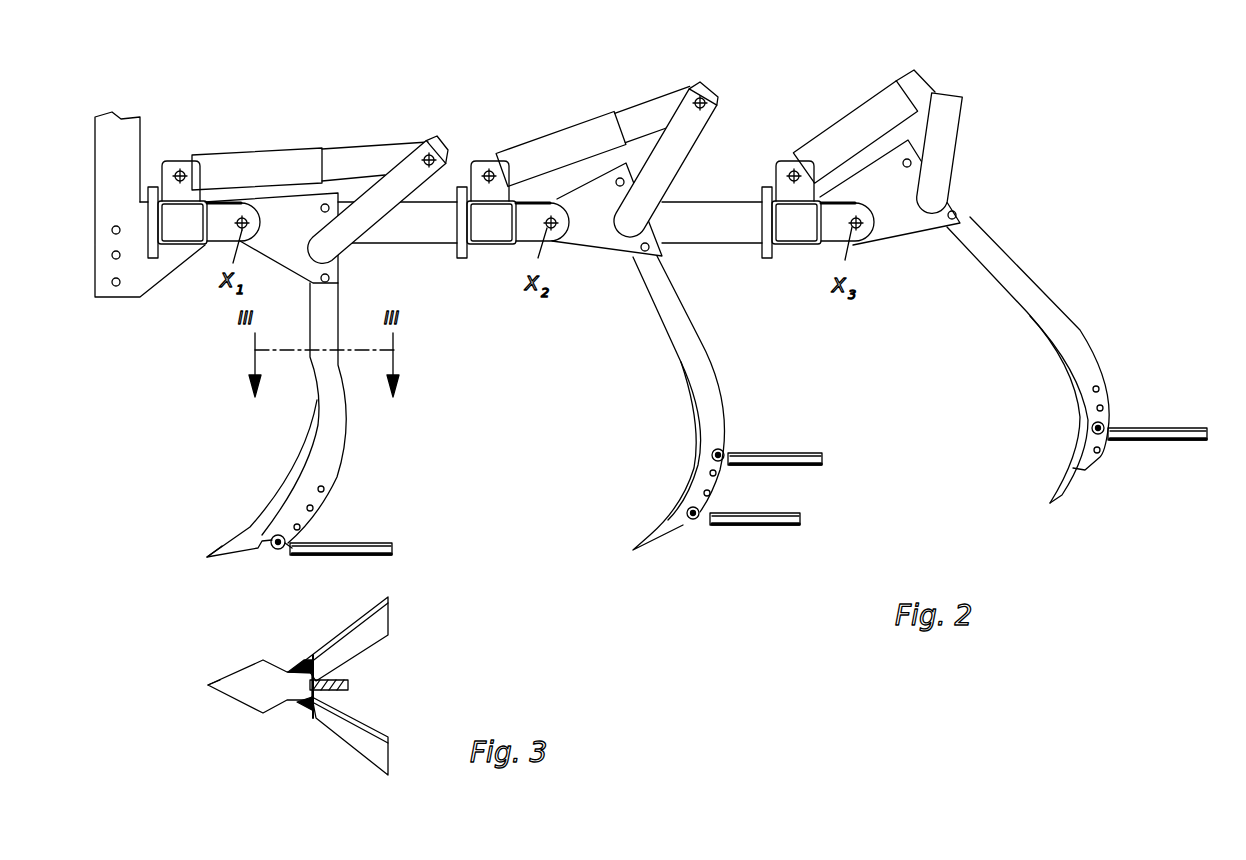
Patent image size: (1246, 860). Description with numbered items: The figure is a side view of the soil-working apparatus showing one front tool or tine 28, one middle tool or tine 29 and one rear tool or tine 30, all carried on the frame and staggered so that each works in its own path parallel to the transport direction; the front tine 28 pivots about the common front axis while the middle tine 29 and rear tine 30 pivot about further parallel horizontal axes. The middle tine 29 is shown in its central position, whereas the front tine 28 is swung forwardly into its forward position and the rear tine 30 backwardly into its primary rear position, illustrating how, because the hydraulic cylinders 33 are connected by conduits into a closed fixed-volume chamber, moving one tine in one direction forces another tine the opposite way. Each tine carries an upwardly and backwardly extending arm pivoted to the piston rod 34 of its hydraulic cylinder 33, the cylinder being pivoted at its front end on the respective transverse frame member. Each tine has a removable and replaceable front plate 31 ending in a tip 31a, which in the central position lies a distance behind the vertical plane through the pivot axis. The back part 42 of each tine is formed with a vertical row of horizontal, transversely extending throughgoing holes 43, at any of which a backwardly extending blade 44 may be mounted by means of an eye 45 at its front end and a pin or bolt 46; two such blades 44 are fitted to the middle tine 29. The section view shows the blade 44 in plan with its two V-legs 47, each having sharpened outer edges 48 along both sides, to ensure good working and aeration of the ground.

In FIG. 2, the front tool or tine 28 is at (370, 413).
In FIG. 2, the middle tool or tine 29 is at (675, 394).
In FIG. 2, the rear tool or tine 30 is at (1020, 324).
In FIG. 2, the front plate 31 is at (292, 493).
In FIG. 3, the front plate 31 is at (268, 693).
In FIG. 2, the tip 31a is at (202, 567).
In FIG. 3, the tip 31a is at (223, 688).
In FIG. 2, the hydraulic cylinder 33 is at (251, 160).
In FIG. 2, the piston rod 34 is at (363, 158).
In FIG. 2, the back part of tine 42 is at (332, 458).
In FIG. 3, the back part of tine 42 is at (350, 683).
In FIG. 2, the throughgoing holes 43 is at (297, 527).
In FIG. 2, the blade 44 is at (760, 488).
In FIG. 3, the blade 44 is at (312, 737).
In FIG. 2, the eye 45 is at (288, 546).
In FIG. 2, the pin or bolt 46 is at (277, 549).
In FIG. 2, the V-leg 47 is at (390, 553).
In FIG. 3, the V-leg 47 is at (375, 632).
In FIG. 2, the sharpened outer edges 48 is at (360, 547).
In FIG. 3, the sharpened outer edges 48 is at (327, 643).